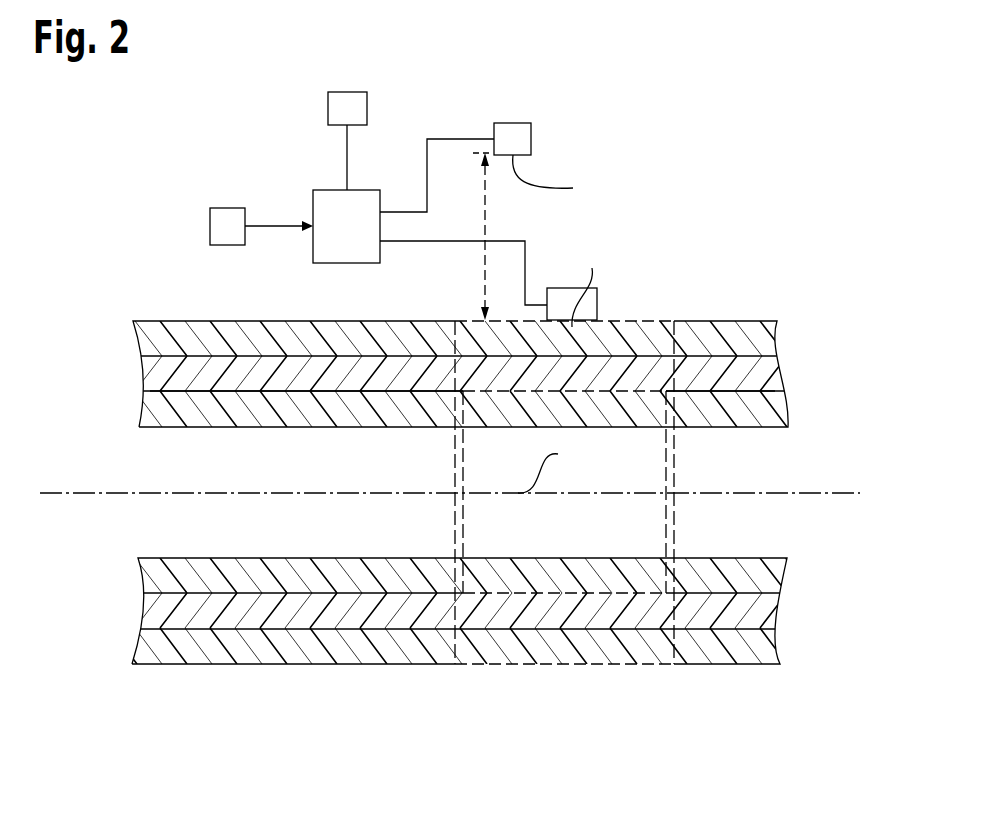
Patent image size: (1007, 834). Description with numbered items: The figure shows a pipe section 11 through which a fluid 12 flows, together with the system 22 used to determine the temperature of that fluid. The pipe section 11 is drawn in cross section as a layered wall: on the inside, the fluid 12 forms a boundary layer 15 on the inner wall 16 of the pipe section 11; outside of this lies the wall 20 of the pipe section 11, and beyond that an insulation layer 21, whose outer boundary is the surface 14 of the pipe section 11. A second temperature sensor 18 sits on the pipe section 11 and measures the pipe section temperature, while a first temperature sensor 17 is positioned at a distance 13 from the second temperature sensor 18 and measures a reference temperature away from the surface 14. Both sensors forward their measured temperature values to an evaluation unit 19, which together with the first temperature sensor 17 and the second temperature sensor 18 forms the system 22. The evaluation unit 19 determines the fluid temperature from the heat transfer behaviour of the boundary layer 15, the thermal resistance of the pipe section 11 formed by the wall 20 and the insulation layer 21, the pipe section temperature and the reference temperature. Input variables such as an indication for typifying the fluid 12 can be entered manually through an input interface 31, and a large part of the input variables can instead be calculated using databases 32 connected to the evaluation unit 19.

The pipe section 11 is at (676, 470).
The fluid 12 is at (465, 533).
The distance 13 is at (483, 271).
The surface 14 is at (753, 316).
The boundary layer 15 is at (461, 409).
The inner wall 16 is at (218, 400).
The first temperature sensor 17 is at (533, 140).
The second temperature sensor 18 is at (597, 300).
The evaluation unit 19 is at (327, 190).
The wall 20 is at (461, 373).
The insulation layer 21 is at (461, 338).
The system 22 is at (686, 177).
The input interface 31 is at (210, 228).
The databases 32 is at (328, 108).